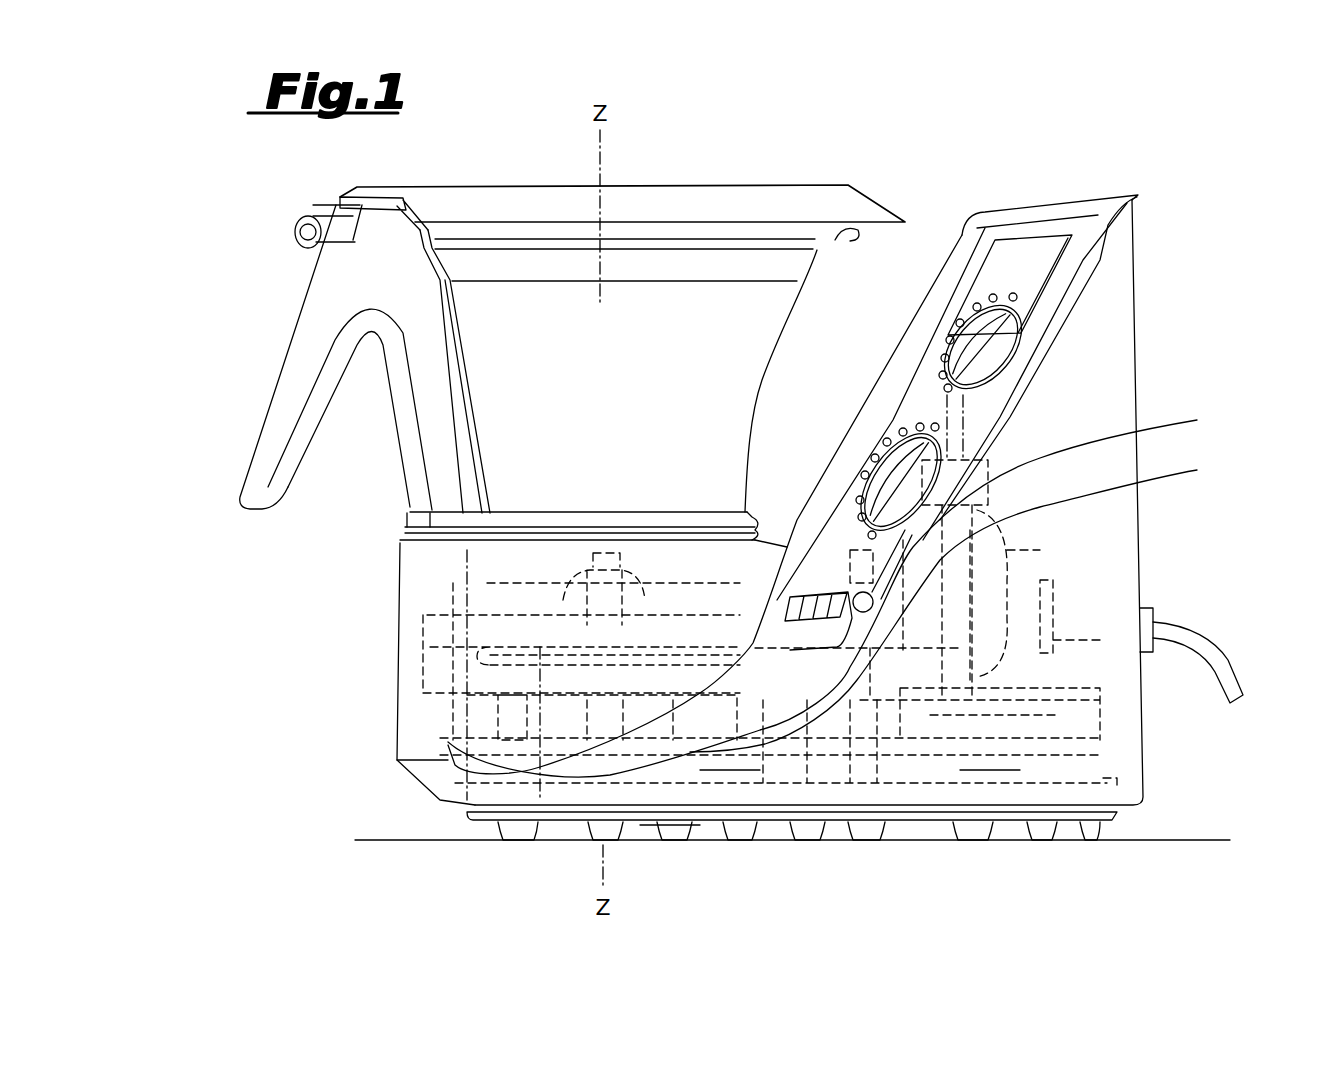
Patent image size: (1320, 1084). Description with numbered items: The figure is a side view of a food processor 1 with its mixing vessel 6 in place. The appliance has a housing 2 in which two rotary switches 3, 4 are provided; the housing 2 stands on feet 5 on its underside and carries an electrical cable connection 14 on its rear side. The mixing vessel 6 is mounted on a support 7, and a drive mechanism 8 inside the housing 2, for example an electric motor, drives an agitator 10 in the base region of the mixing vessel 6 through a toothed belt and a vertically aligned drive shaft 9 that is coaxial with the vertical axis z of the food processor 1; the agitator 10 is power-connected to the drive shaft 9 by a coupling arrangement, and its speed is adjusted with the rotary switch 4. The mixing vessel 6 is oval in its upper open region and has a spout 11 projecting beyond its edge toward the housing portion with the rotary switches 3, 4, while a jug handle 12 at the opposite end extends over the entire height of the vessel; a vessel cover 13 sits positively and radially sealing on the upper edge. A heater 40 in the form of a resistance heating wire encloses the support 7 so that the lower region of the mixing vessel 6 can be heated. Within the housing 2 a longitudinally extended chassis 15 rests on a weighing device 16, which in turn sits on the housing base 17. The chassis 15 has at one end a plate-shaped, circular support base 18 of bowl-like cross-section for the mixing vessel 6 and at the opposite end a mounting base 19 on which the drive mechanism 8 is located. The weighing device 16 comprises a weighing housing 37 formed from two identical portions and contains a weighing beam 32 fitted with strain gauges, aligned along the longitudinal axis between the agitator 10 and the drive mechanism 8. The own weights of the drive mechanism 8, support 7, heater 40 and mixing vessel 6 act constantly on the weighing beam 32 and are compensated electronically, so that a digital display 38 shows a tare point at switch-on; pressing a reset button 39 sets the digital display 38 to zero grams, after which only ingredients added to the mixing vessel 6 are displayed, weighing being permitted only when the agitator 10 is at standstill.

The food processor 1 is at (1172, 241).
The housing 2 is at (1100, 540).
The rotary switch 3 is at (1000, 357).
The rotary switch 4 is at (937, 507).
The feet 5 is at (597, 833).
The mixing vessel 6 is at (575, 378).
The support 7 is at (430, 621).
The drive mechanism 8 is at (1000, 567).
The drive shaft 9 is at (437, 710).
The agitator 10 is at (535, 596).
The spout 11 is at (835, 240).
The jug handle 12 is at (292, 382).
The vessel cover 13 is at (700, 200).
The electrical cable connection 14 is at (1220, 657).
The chassis 15 is at (498, 697).
The weighing device 16 is at (455, 794).
The housing base 17 is at (687, 843).
The support base 18 is at (400, 762).
The mounting base 19 is at (990, 730).
The weighing beam 32 is at (740, 790).
The weighing housing 37 is at (993, 773).
The digital display 38 is at (842, 588).
The reset button 39 is at (963, 602).
The heater 40 is at (560, 590).